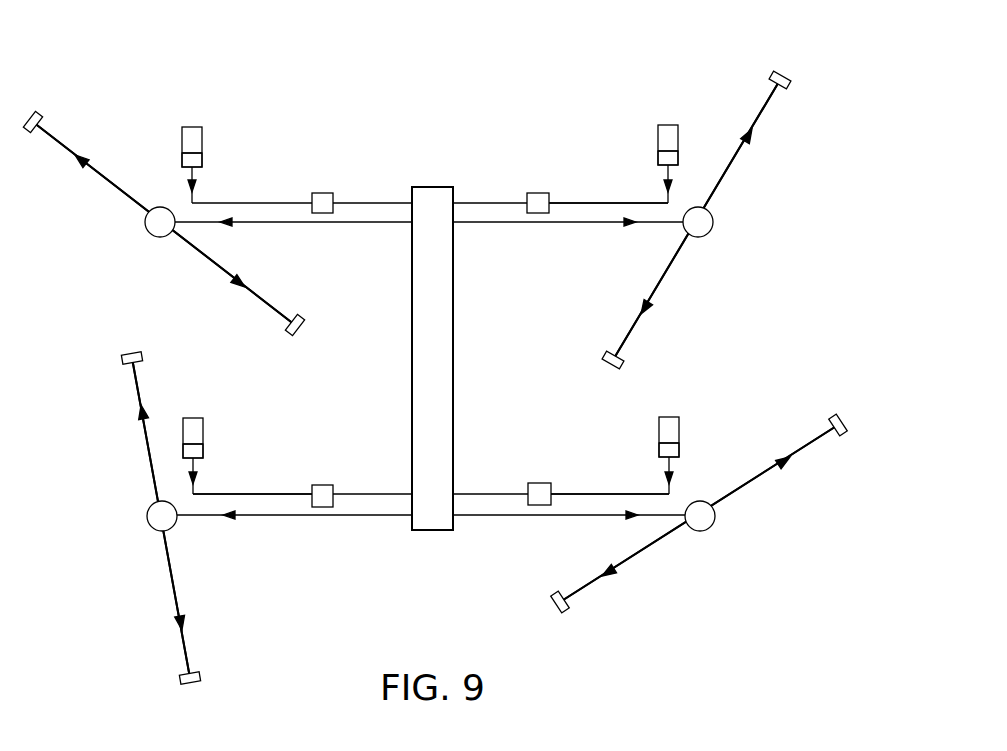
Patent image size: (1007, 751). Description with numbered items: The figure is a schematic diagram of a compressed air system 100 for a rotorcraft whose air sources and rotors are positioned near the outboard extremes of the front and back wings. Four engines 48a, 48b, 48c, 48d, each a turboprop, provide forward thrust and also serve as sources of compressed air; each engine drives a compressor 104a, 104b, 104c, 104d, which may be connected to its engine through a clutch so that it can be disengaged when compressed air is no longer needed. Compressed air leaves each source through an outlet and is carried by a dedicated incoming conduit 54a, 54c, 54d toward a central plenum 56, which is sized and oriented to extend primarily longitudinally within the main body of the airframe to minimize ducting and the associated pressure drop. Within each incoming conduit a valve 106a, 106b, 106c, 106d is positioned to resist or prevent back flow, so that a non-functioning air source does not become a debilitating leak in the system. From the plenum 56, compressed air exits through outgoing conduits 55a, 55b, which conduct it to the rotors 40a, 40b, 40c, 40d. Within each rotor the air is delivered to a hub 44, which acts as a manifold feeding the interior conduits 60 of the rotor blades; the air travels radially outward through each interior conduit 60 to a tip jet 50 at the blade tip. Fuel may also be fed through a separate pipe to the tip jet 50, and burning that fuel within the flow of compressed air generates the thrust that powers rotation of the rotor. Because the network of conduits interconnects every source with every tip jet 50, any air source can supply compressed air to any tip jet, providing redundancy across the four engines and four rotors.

The compressed air system 100 is at (512, 102).
The plenum 56 is at (455, 320).
The incoming conduit 54a is at (595, 203).
The incoming conduit 54c is at (482, 494).
The incoming conduit 54d is at (278, 494).
The outgoing conduit 55a is at (580, 226).
The outgoing conduit 55b is at (355, 226).
The valve 106a is at (535, 193).
The valve 106b is at (322, 203).
The valve 106c is at (542, 485).
The valve 106d is at (320, 485).
The engine 48a is at (668, 131).
The engine 48b is at (190, 133).
The engine 48c is at (680, 428).
The engine 48d is at (192, 420).
The compressor 104a is at (678, 157).
The compressor 104b is at (200, 158).
The compressor 104c is at (680, 452).
The compressor 104d is at (203, 450).
The rotor 40a is at (766, 200).
The rotor 40b is at (92, 253).
The rotor 40c is at (760, 531).
The rotor 40d is at (125, 544).
The hub 44 is at (147, 226).
The interior conduit 60 is at (213, 265).
The tip jet 50 is at (37, 113).